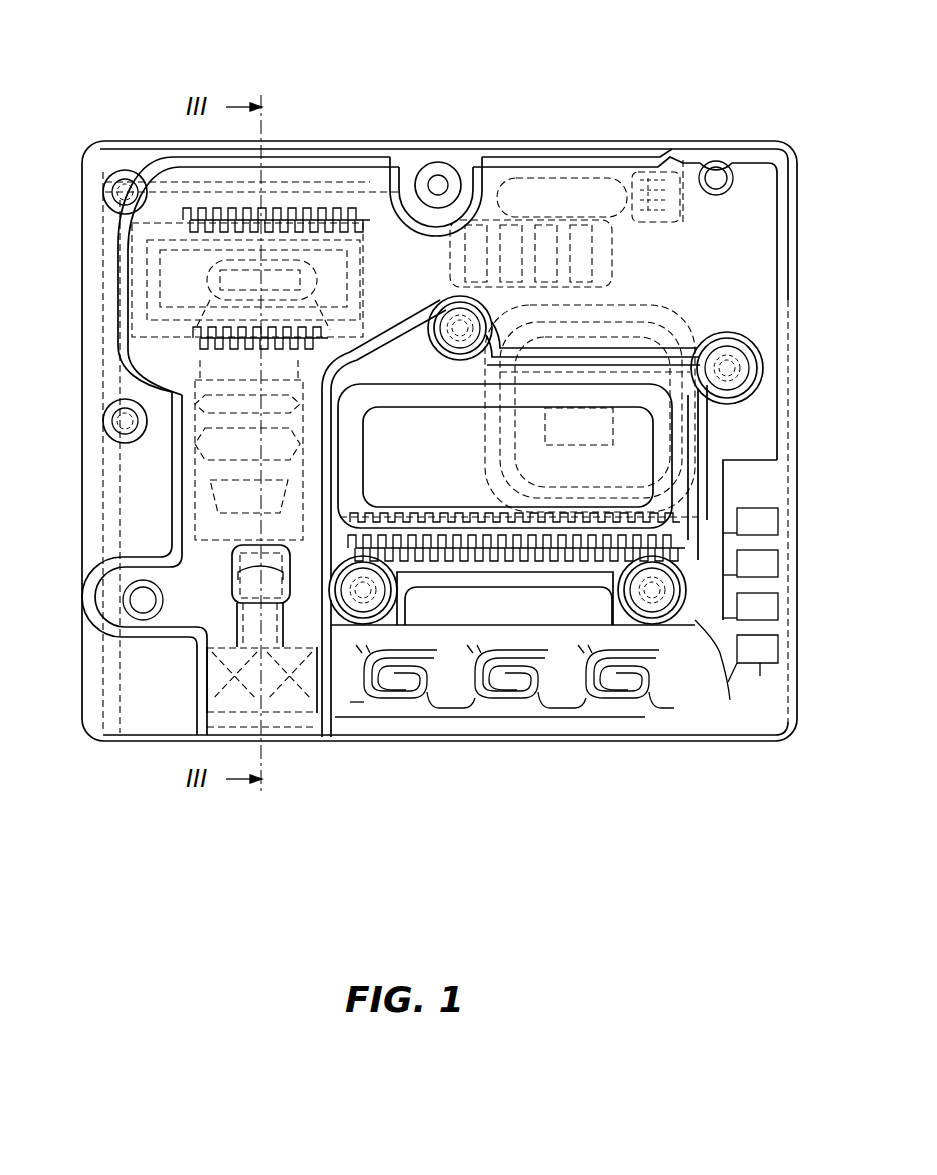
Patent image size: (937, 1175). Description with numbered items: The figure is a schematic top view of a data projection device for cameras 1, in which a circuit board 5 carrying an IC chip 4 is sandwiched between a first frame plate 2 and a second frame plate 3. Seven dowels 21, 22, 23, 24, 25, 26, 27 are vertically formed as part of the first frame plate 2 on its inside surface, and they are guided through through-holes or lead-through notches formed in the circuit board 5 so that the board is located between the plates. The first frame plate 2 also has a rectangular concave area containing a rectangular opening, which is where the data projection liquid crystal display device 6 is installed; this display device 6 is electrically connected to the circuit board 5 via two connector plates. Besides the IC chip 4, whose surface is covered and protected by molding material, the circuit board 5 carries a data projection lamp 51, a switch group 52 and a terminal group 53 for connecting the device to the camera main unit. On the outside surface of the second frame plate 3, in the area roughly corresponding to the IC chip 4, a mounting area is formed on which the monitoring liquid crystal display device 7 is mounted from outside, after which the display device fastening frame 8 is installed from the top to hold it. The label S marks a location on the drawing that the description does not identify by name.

The data projection device for cameras 1 is at (472, 846).
The first frame plate 2 is at (128, 738).
The second frame plate 3 is at (150, 648).
The IC chip 4 is at (565, 445).
The circuit board 5 is at (714, 718).
The data projection liquid crystal display device 6 is at (277, 212).
The monitoring liquid crystal display device 7 is at (517, 393).
The display device fastening frame 8 is at (650, 412).
The dowel 21 is at (730, 700).
The dowel 22 is at (360, 600).
The dowel 23 is at (110, 424).
The dowel 24 is at (125, 190).
The dowel 25 is at (443, 182).
The dowel 26 is at (463, 320).
The dowel 27 is at (740, 362).
The data projection lamp 51 is at (292, 727).
The switch group 52 is at (627, 687).
The terminal group 53 is at (773, 650).
The seal S is at (340, 334).